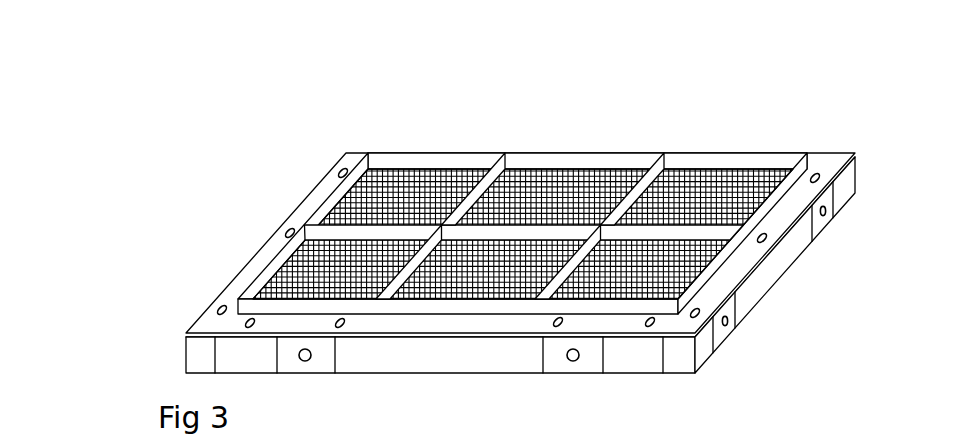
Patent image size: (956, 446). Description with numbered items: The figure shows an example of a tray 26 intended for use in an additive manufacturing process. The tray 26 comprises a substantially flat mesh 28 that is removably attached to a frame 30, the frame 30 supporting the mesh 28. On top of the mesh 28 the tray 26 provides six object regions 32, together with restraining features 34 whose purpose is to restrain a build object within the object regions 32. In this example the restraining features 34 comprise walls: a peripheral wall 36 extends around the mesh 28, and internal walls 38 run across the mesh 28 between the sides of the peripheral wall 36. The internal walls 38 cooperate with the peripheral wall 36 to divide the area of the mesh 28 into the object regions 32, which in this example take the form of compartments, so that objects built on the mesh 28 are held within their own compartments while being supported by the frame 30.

The tray 26 is at (459, 186).
The mesh 28 is at (407, 207).
The frame 30 is at (202, 355).
The object regions 32 is at (650, 202).
The restraining features 34 is at (667, 140).
The peripheral wall 36 is at (713, 158).
The internal walls 38 is at (683, 231).